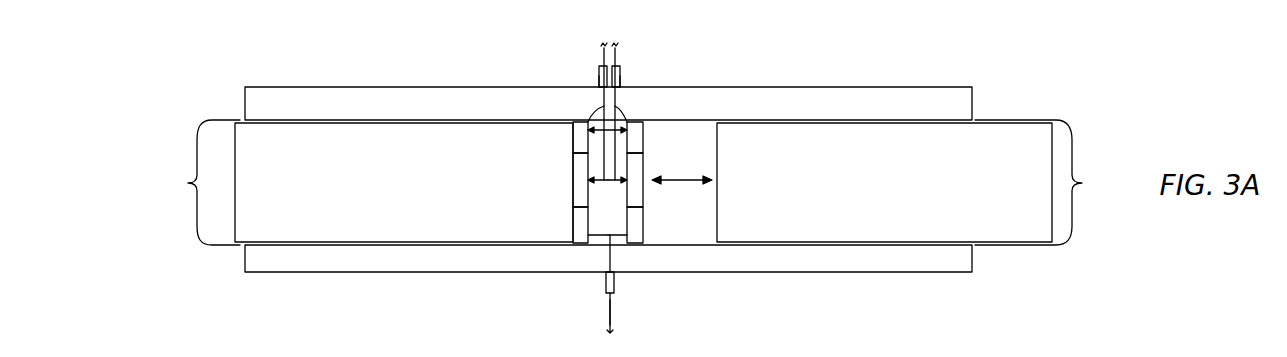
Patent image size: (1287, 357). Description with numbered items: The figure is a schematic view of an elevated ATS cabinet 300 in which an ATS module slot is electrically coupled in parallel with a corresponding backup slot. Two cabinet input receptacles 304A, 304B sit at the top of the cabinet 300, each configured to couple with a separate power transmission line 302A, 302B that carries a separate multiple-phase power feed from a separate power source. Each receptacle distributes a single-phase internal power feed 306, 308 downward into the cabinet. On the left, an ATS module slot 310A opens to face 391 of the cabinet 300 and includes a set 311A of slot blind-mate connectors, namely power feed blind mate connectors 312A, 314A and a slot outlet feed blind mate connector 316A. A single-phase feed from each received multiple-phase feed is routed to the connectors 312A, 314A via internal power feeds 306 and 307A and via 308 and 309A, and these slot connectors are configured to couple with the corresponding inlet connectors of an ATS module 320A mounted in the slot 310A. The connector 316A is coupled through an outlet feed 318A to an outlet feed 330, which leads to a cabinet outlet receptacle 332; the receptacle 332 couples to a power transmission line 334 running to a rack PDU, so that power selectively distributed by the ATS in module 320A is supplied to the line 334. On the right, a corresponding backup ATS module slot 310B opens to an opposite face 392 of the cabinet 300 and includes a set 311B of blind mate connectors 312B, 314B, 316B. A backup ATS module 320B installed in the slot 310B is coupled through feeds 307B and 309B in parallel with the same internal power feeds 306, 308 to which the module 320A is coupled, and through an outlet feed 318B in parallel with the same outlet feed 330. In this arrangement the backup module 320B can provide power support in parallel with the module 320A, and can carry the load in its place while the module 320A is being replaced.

The ATS cabinet 300 is at (608, 179).
The power transmission line 302A is at (604, 48).
The power transmission line 302B is at (615, 48).
The cabinet input receptacle 304A is at (599, 66).
The cabinet input receptacle 304B is at (621, 66).
The internal power feed 306 is at (599, 82).
The internal power feed 308 is at (621, 82).
The internal power feed 307A is at (570, 121).
The feed 307B is at (630, 121).
The internal power feed 309A is at (588, 178).
The feed 309B is at (624, 183).
The ATS module slot 310A is at (186, 183).
The backup ATS module slot 310B is at (1083, 183).
The set of slot blind-mate connectors 311A is at (573, 120).
The set of blind mate connectors 311B is at (650, 120).
The power feed blind mate connector 312A is at (573, 144).
The blind mate connector 312B is at (644, 134).
The power feed blind mate connector 314A is at (573, 195).
The blind mate connector 314B is at (644, 161).
The slot outlet feed blind mate connector 316A is at (573, 225).
The blind mate connector 316B is at (644, 225).
The outlet feed 318A is at (594, 236).
The outlet feed 318B is at (623, 236).
The ATS module 320A is at (404, 182).
The backup ATS module 320B is at (884, 182).
The outlet feed 330 is at (618, 271).
The cabinet outlet receptacle 332 is at (605, 281).
The power transmission line 334 is at (609, 315).
The face 391 is at (245, 272).
The face 392 is at (972, 272).